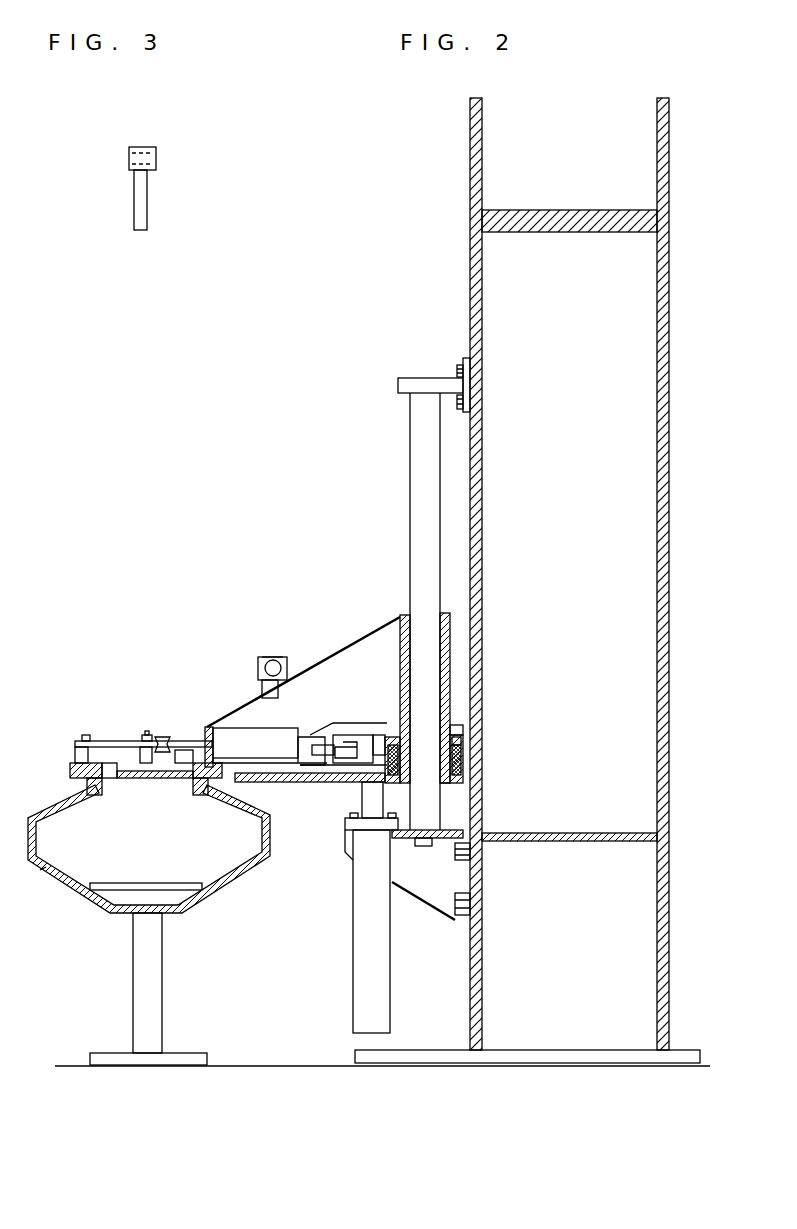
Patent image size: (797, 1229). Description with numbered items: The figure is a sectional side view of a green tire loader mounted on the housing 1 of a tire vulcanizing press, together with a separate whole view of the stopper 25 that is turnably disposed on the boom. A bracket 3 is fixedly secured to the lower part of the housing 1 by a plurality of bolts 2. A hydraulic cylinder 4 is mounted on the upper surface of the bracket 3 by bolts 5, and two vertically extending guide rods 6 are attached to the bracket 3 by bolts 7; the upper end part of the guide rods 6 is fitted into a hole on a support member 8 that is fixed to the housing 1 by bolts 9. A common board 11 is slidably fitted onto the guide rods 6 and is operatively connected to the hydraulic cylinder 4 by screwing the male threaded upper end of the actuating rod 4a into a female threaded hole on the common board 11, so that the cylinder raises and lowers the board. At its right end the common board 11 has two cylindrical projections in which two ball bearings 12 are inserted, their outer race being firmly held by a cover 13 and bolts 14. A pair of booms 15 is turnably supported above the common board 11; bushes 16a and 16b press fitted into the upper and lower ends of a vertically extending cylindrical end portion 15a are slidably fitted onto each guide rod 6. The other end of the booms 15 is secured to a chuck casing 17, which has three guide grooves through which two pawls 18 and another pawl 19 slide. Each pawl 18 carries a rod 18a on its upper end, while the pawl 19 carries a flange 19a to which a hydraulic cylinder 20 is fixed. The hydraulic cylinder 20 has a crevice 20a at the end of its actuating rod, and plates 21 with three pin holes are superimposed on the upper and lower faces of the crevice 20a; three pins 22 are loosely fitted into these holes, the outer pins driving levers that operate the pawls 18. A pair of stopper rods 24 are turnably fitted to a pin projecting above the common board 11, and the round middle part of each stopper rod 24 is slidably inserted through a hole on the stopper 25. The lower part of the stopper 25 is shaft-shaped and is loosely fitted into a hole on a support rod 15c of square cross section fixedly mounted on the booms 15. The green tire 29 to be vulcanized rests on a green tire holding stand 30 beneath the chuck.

In FIG. 2, the housing 1 is at (470, 1012).
In FIG. 2, the bolts 2 is at (460, 915).
In FIG. 2, the bracket 3 is at (434, 905).
In FIG. 2, the hydraulic cylinder 4 is at (353, 990).
In FIG. 2, the piston rod 4a is at (358, 783).
In FIG. 2, the bolts 5 is at (345, 830).
In FIG. 2, the guide rods 6 is at (410, 470).
In FIG. 2, the bolts 7 is at (420, 846).
In FIG. 2, the support member 8 is at (418, 378).
In FIG. 2, the bolts 9 is at (462, 360).
In FIG. 2, the common board 11 is at (283, 782).
In FIG. 2, the ball bearings 12 is at (463, 758).
In FIG. 2, the cover 13 is at (463, 738).
In FIG. 2, the bolts 14 is at (463, 727).
In FIG. 2, the booms 15 is at (336, 650).
In FIG. 2, the cylindrical end portion 15a is at (404, 622).
In FIG. 2, the support rod 15c is at (262, 690).
In FIG. 2, the bush 16a is at (450, 618).
In FIG. 2, the bush 16b is at (445, 788).
In FIG. 2, the chuck casing 17 is at (70, 772).
In FIG. 2, the pawls 18 is at (93, 795).
In FIG. 2, the rod 18a is at (86, 735).
In FIG. 2, the pawl 19 is at (200, 795).
In FIG. 2, the flange 19a is at (208, 730).
In FIG. 2, the hydraulic cylinder 20 is at (263, 740).
In FIG. 2, the crevice 20a is at (162, 739).
In FIG. 2, the plates 21 is at (142, 741).
In FIG. 2, the pins 22 is at (148, 731).
In FIG. 2, the stopper rods 24 is at (285, 670).
In FIG. 3, the stopper 25 is at (147, 195).
In FIG. 2, the stopper 25 is at (270, 657).
In FIG. 2, the green tire 29 is at (268, 855).
In FIG. 2, the green tire holding stand 30 is at (163, 993).